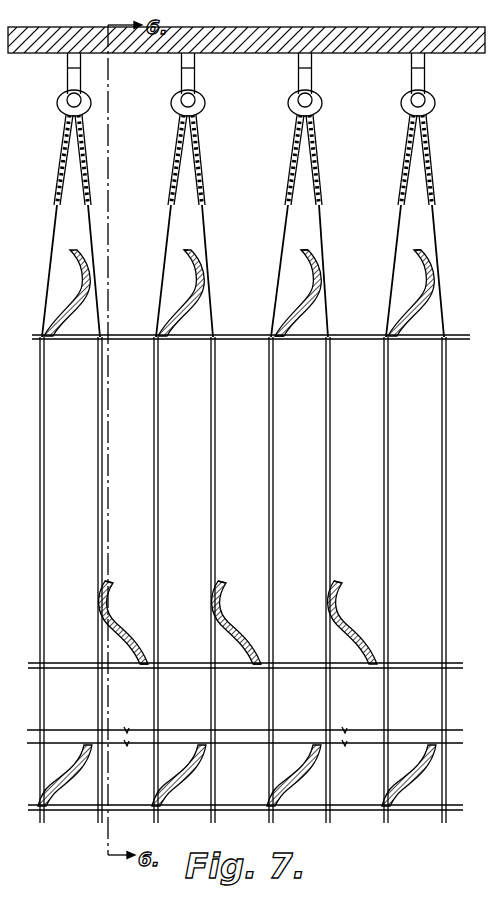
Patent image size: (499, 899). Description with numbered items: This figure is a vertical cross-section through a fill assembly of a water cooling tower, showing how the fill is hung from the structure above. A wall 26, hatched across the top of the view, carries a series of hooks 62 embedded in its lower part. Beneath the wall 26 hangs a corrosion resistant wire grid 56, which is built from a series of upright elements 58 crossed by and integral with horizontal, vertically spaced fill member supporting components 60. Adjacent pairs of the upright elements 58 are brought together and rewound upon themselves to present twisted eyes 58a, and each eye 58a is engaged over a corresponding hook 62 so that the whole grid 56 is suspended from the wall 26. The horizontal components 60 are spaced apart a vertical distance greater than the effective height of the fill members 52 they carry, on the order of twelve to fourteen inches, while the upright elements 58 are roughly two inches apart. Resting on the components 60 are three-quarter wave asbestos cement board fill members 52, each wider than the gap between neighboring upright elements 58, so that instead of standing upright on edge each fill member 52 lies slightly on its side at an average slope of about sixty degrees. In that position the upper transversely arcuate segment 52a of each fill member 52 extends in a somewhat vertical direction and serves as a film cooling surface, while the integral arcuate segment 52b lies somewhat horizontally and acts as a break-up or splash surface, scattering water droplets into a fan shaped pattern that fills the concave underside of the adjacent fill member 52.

The wall 26 is at (270, 52).
The hooks 62 is at (312, 80).
The eyes 58a is at (82, 176).
The upright elements 58 is at (93, 538).
The grid 56 is at (455, 448).
The horizontal fill member supporting components 60 is at (120, 344).
The fill members 52 is at (432, 307).
The upper transversely arcuate segment 52a is at (428, 260).
The arcuate segment 52b is at (290, 330).